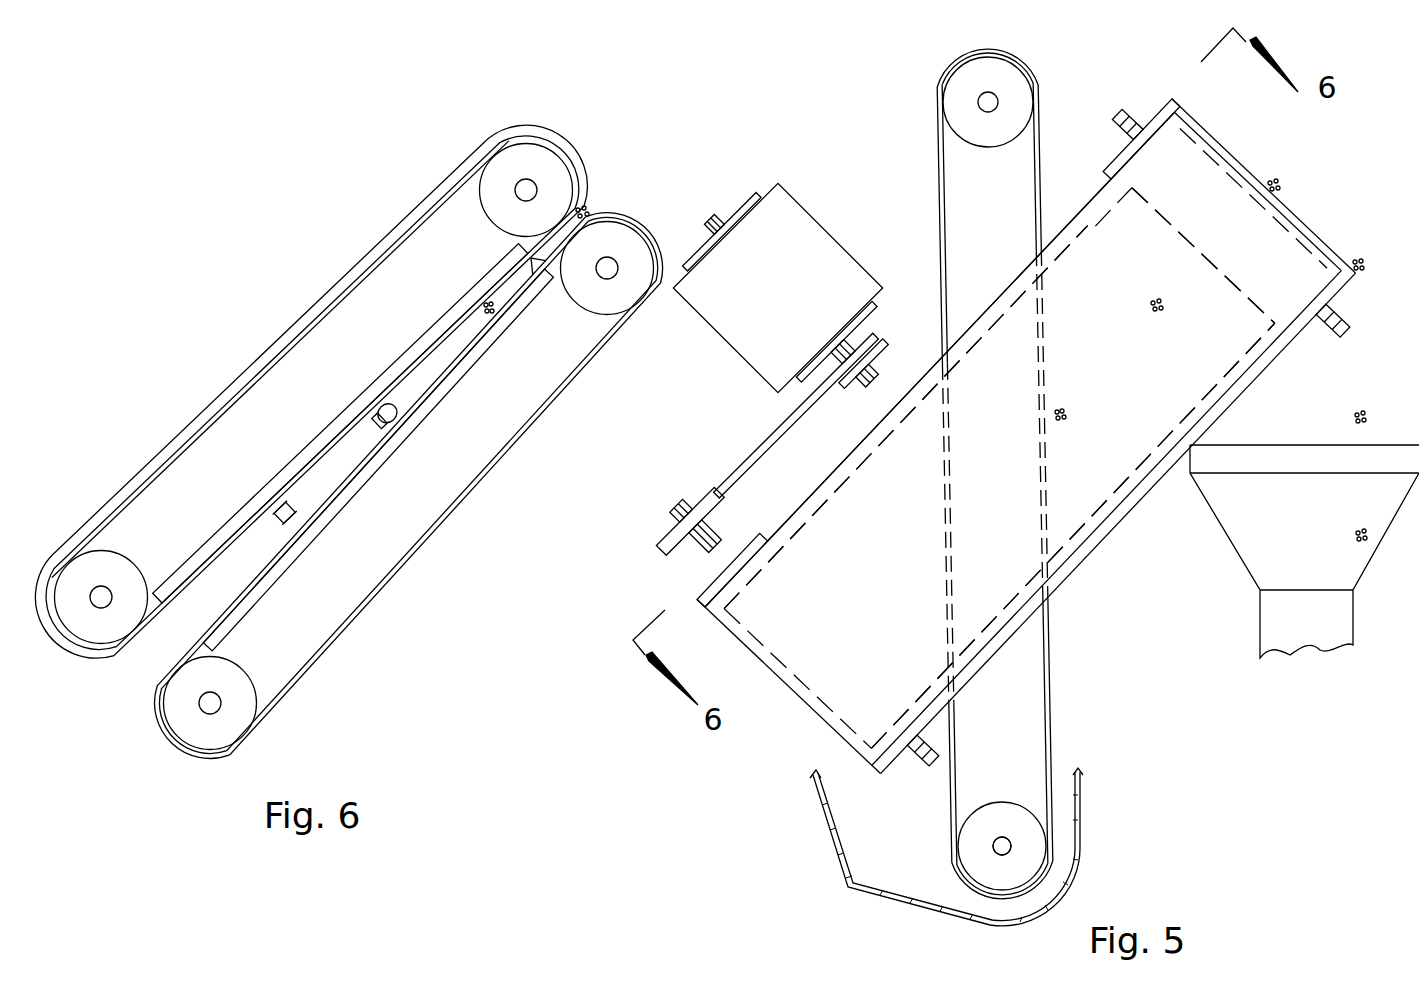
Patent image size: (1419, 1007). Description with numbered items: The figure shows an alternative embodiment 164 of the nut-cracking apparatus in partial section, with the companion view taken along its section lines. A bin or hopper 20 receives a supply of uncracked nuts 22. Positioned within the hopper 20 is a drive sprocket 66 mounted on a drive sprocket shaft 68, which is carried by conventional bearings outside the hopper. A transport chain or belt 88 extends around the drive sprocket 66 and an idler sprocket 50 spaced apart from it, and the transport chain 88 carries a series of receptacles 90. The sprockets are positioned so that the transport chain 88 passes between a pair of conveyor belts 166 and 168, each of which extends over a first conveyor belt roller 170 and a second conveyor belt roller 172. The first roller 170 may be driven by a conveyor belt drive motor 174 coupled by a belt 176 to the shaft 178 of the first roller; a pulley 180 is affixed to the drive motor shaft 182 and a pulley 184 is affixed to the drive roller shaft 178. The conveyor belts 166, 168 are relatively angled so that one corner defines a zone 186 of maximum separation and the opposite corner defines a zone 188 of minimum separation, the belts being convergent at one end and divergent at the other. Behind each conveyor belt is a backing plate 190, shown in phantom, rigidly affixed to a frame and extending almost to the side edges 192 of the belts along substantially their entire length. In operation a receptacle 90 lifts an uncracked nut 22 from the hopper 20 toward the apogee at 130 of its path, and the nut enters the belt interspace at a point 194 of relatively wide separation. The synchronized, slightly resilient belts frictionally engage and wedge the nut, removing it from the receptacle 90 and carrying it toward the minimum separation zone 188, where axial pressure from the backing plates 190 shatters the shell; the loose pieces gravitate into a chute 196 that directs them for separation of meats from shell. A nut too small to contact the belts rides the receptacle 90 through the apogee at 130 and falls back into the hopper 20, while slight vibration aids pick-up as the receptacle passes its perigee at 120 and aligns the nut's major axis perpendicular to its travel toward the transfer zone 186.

In FIG. 5, the bin 20 is at (838, 840).
In FIG. 5, the uncracked nuts 22 is at (1347, 419).
In FIG. 5, the idler sprocket 50 is at (994, 133).
In FIG. 5, the drive sprocket 66 is at (1010, 814).
In FIG. 5, the drive sprocket shaft 68 is at (995, 848).
In FIG. 5, the transport chain or belt 88 is at (1056, 672).
In FIG. 5, the receptacles 90 is at (1067, 421).
In FIG. 5, the perigee 120 is at (973, 888).
In FIG. 5, the apogee 130 is at (990, 51).
In FIG. 5, the alternative embodiment 164 is at (1362, 248).
In FIG. 6, the conveyor belt 166 is at (324, 654).
In FIG. 5, the conveyor belt 166 is at (1069, 230).
In FIG. 6, the conveyor belt 168 is at (243, 397).
In FIG. 6, the first conveyor belt roller 170 is at (112, 632).
In FIG. 5, the first conveyor belt roller 170 is at (895, 766).
In FIG. 6, the second conveyor belt roller 172 is at (557, 172).
In FIG. 5, the second conveyor belt roller 172 is at (1331, 295).
In FIG. 5, the conveyor belt drive motor 174 is at (742, 302).
In FIG. 5, the belt 176 is at (766, 444).
In FIG. 5, the shaft of the first roller 178 is at (711, 552).
In FIG. 5, the pulley 180 is at (872, 345).
In FIG. 5, the drive motor shaft 182 is at (866, 385).
In FIG. 5, the pulley 184 is at (679, 508).
In FIG. 6, the zone of maximum separation 186 is at (166, 632).
In FIG. 6, the zone of minimum separation 188 is at (548, 268).
In FIG. 6, the backing plate 190 is at (332, 434).
In FIG. 5, the side edges 192 is at (952, 315).
In FIG. 5, the entry point 194 is at (1047, 572).
In FIG. 5, the chute 196 is at (1352, 560).